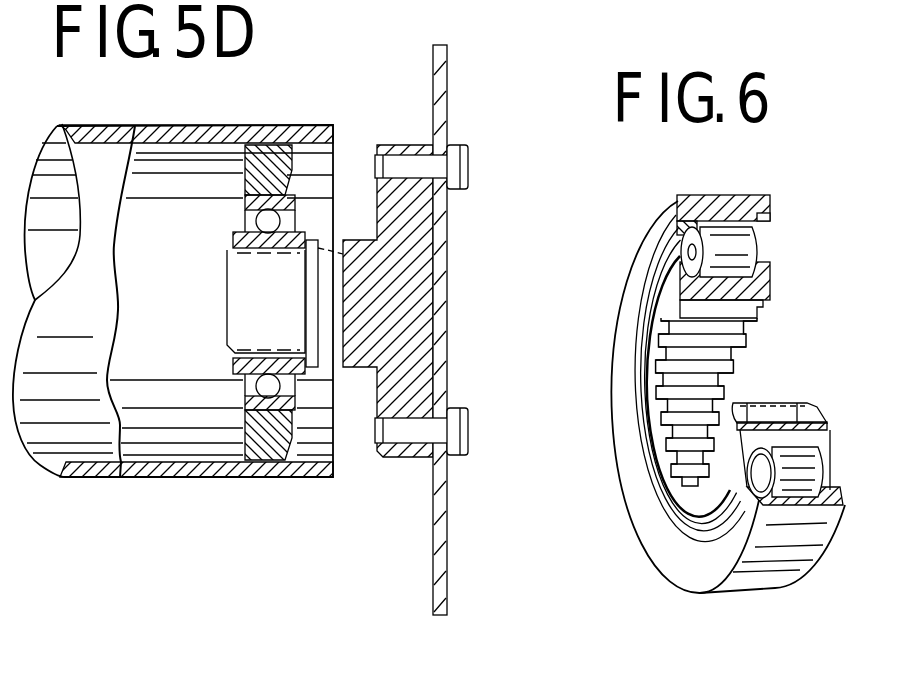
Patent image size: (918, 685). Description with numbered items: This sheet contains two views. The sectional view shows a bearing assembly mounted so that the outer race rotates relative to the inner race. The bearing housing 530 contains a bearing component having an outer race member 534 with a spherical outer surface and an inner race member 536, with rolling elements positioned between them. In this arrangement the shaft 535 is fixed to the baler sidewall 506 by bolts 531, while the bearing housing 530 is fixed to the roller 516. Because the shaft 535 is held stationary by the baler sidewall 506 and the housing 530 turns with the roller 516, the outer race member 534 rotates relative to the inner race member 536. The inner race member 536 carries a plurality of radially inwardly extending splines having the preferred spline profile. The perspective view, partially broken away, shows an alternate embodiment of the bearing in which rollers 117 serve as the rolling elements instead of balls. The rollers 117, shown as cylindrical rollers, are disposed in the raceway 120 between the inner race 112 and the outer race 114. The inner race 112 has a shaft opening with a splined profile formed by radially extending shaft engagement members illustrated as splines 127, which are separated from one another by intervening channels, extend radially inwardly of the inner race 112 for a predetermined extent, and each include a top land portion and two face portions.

In FIG. 5D, the baler sidewall 506 is at (443, 130).
In FIG. 5D, the bolts 531 is at (470, 172).
In FIG. 5D, the shaft 535 is at (413, 303).
In FIG. 5D, the inner race member 536 is at (304, 246).
In FIG. 5D, the outer race member 534 is at (250, 395).
In FIG. 5D, the bearing housing 530 is at (283, 456).
In FIG. 5D, the roller 516 is at (170, 463).
In FIG. 6, the raceway 120 is at (714, 216).
In FIG. 6, the rollers 117 is at (752, 245).
In FIG. 6, the inner race 112 is at (662, 315).
In FIG. 6, the splines 127 is at (733, 357).
In FIG. 6, the outer race 114 is at (683, 557).